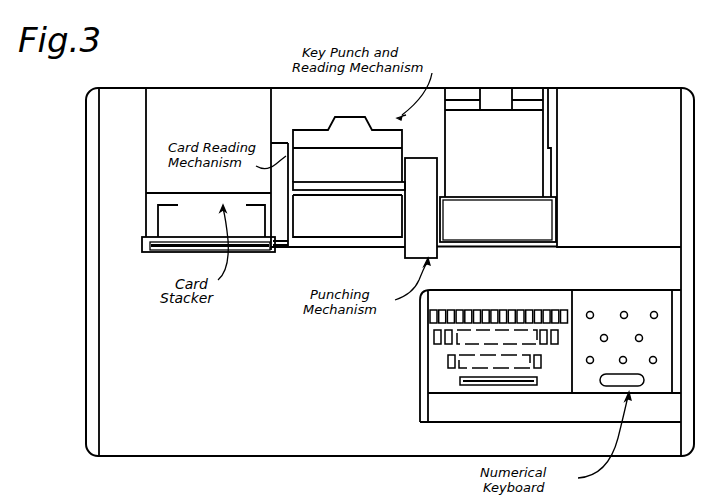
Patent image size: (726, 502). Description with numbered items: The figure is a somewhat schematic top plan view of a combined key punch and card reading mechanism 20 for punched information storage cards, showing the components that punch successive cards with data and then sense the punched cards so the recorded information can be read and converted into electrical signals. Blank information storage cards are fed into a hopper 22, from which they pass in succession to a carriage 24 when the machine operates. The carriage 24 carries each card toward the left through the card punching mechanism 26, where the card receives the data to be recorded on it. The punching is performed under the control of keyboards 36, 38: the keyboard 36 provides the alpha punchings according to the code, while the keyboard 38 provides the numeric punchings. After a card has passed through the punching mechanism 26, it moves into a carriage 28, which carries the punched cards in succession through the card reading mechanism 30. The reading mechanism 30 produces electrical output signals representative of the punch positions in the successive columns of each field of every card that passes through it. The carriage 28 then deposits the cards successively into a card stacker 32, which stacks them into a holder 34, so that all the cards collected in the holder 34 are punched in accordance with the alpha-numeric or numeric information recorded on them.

The key punch and card reading mechanism 20 is at (275, 397).
The hopper 22 is at (497, 97).
The carriage 24 is at (520, 225).
The card punching mechanism 26 is at (416, 245).
The carriage 28 is at (365, 216).
The card reading mechanism 30 is at (280, 218).
The card stacker 32 is at (183, 222).
The holder 34 is at (179, 104).
The keyboard 36 is at (518, 283).
The keyboard 38 is at (599, 303).